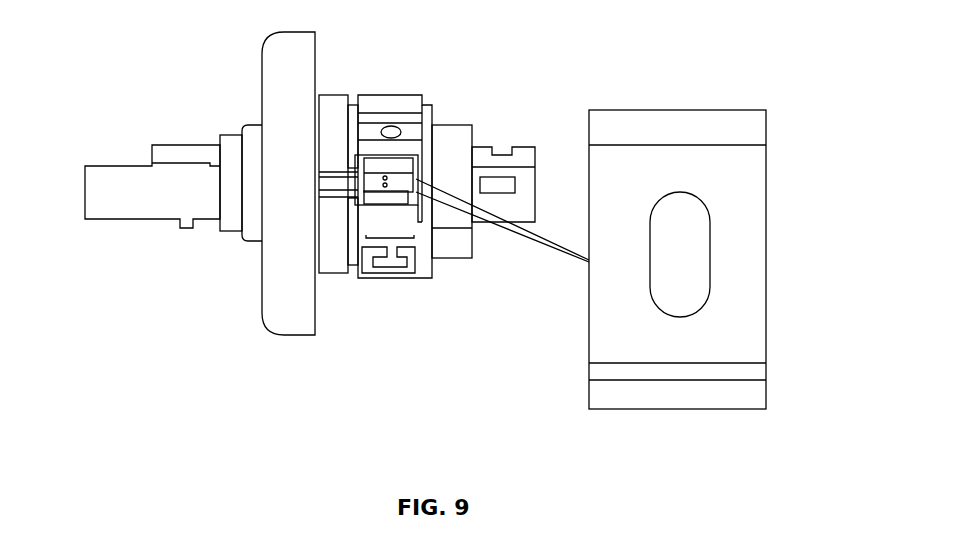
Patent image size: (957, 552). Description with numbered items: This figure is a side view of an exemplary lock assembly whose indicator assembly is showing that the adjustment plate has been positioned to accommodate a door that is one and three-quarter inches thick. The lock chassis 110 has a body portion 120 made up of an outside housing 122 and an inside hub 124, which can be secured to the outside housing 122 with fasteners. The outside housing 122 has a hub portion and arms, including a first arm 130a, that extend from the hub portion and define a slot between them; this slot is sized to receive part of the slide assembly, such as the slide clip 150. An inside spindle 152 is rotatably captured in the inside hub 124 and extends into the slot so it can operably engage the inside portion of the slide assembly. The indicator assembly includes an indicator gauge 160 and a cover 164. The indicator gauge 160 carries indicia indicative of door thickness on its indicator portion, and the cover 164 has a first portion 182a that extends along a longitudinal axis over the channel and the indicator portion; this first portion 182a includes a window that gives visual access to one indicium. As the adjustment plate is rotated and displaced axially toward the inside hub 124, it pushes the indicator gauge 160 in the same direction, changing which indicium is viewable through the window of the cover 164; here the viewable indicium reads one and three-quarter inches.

The lock chassis 110 is at (390, 50).
The outside housing 122 is at (372, 101).
The slide clip 150 is at (407, 102).
The first arm 130a is at (403, 165).
The body portion 120 is at (395, 296).
The inside hub 124 is at (452, 132).
The inside spindle 152 is at (523, 157).
The first portion of the cover 182a is at (745, 334).
The cover 164 is at (623, 350).
The indicator gauge 160 is at (700, 232).